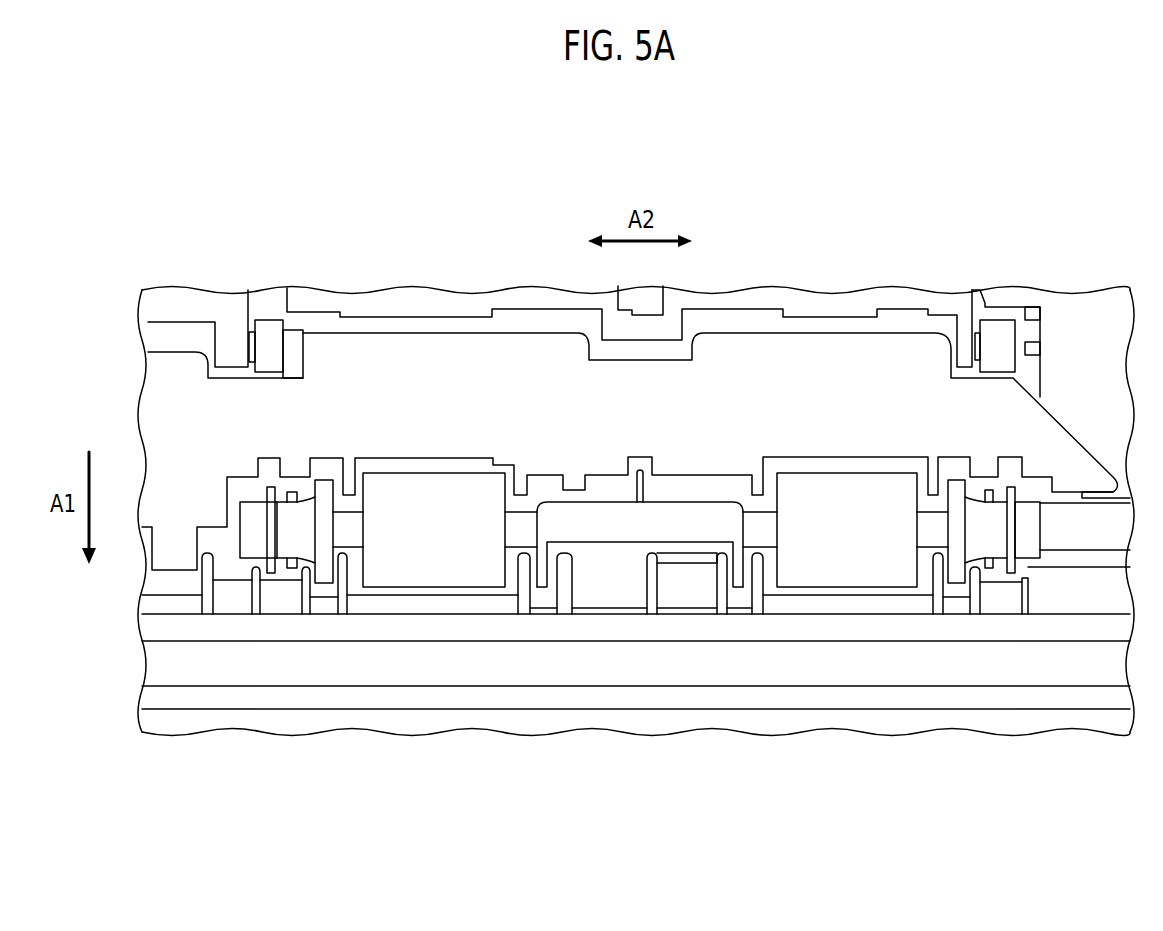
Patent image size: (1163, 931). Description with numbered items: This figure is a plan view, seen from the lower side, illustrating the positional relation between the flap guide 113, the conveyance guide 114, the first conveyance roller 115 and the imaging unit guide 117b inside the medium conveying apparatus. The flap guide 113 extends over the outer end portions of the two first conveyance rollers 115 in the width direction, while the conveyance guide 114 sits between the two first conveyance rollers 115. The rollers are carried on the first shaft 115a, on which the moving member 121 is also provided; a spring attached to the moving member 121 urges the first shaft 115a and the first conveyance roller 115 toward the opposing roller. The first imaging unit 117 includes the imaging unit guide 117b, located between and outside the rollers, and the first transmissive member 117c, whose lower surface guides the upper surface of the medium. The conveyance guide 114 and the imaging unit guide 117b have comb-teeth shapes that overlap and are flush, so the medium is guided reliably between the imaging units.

The flap guide 113 is at (530, 387).
The conveyance guide 114 is at (625, 523).
The first conveyance roller 115 is at (433, 522).
The first shaft 115a is at (923, 530).
The first imaging unit 117 is at (465, 663).
The imaging unit guide 117b is at (252, 572).
The first transmissive member 117c is at (340, 663).
The moving member 121 is at (307, 530).